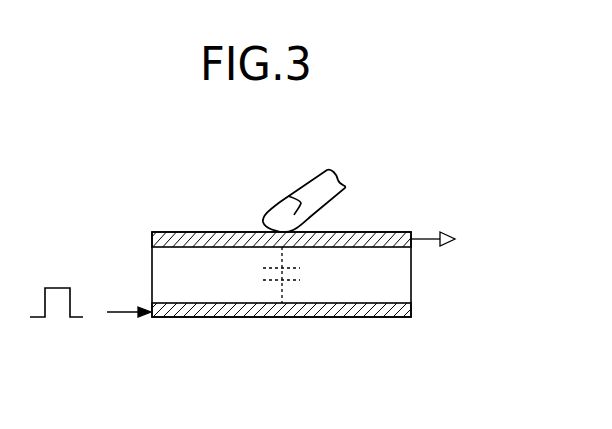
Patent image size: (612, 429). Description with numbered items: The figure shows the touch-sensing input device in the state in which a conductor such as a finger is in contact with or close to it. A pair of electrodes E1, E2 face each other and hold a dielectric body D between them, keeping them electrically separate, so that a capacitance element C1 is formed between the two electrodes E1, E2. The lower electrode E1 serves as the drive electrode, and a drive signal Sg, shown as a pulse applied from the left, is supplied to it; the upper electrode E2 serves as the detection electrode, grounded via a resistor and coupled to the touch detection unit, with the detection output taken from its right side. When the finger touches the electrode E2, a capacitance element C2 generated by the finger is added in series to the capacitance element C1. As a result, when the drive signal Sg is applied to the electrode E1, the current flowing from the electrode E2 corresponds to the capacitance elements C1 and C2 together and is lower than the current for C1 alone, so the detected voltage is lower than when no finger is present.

The dielectric body D is at (402, 292).
The electrode E2 is at (380, 232).
The electrode E1 is at (357, 319).
The capacitance element C1 is at (305, 275).
The capacitance element C2 is at (304, 192).
The drive signal Sg is at (53, 286).